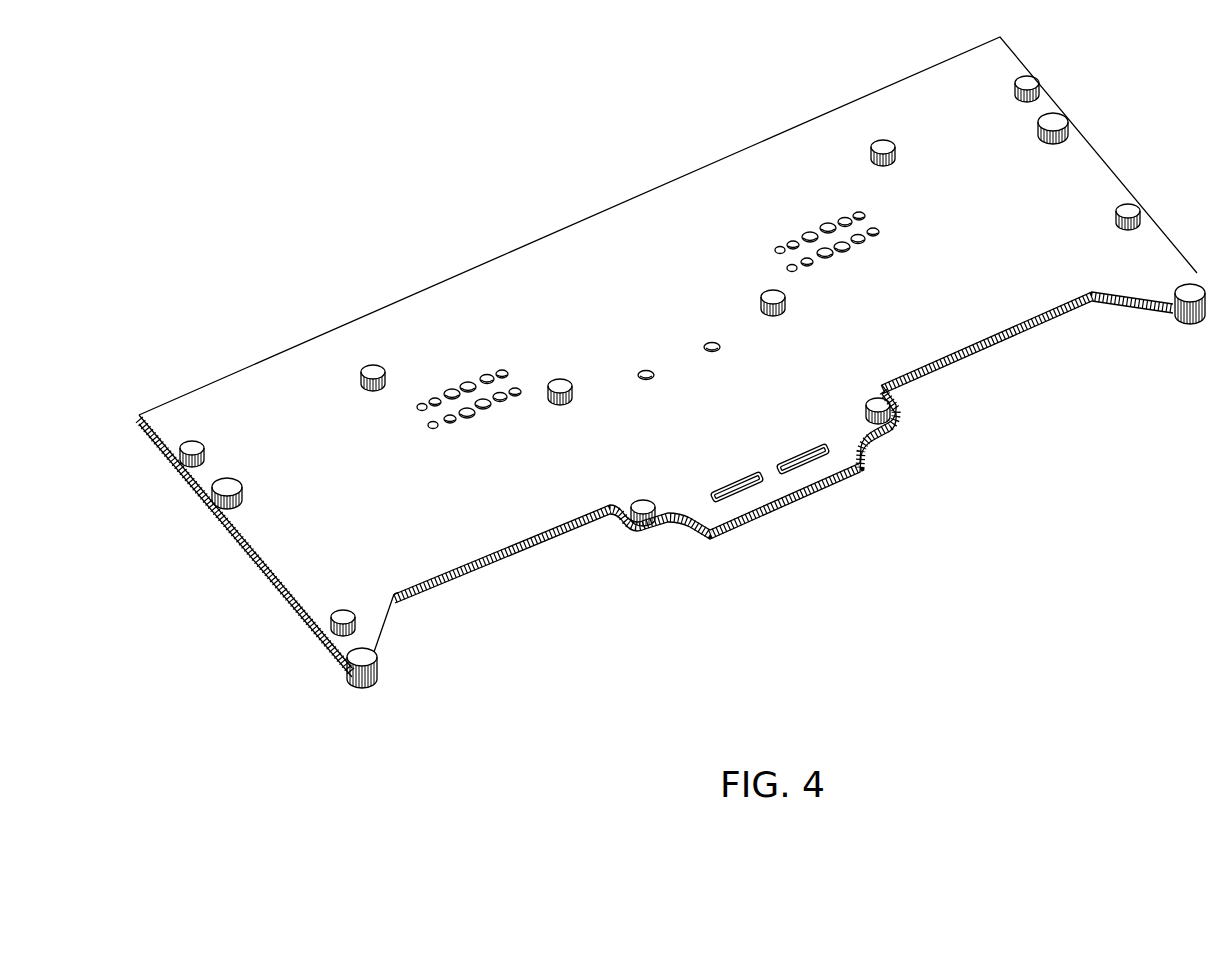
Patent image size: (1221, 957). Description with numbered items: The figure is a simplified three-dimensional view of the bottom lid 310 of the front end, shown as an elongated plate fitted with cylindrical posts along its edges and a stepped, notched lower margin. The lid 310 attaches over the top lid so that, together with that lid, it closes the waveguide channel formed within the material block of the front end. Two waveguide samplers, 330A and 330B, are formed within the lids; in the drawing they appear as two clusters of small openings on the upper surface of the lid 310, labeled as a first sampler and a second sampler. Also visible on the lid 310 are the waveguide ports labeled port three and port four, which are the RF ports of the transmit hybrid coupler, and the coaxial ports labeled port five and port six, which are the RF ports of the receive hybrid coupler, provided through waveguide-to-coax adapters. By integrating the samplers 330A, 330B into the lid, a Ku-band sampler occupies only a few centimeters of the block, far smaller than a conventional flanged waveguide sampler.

The bottom lid 310 is at (943, 97).
The waveguide sampler 330A is at (428, 398).
The waveguide sampler 330B is at (783, 240).